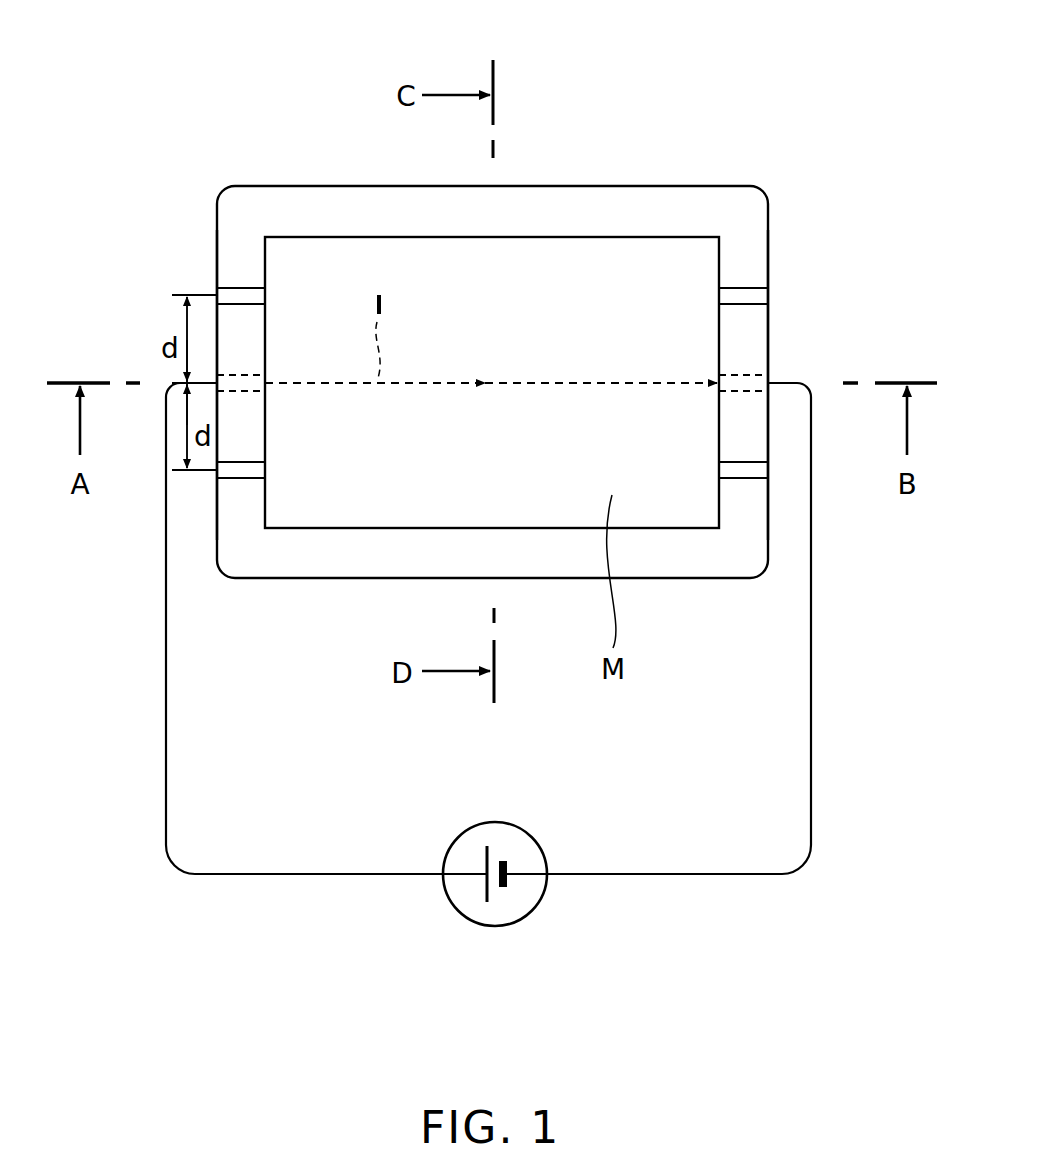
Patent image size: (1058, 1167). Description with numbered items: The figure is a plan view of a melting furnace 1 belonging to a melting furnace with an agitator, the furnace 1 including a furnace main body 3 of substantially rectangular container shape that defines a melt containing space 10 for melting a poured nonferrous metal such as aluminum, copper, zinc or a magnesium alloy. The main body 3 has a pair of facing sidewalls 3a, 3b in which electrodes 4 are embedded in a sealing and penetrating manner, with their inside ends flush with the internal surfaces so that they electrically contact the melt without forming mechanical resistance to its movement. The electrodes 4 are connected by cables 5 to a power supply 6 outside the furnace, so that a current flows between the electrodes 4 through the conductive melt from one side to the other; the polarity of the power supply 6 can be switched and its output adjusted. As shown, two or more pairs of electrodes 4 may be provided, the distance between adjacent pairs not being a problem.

The melting furnace 1 is at (666, 146).
The furnace main body 3 is at (593, 197).
The furnace sidewall 3a is at (218, 212).
The furnace sidewall 3b is at (750, 220).
The electrode 4 is at (254, 296).
The cable 5 is at (166, 693).
The power supply 6 is at (495, 927).
The melt containing space 10 is at (457, 239).